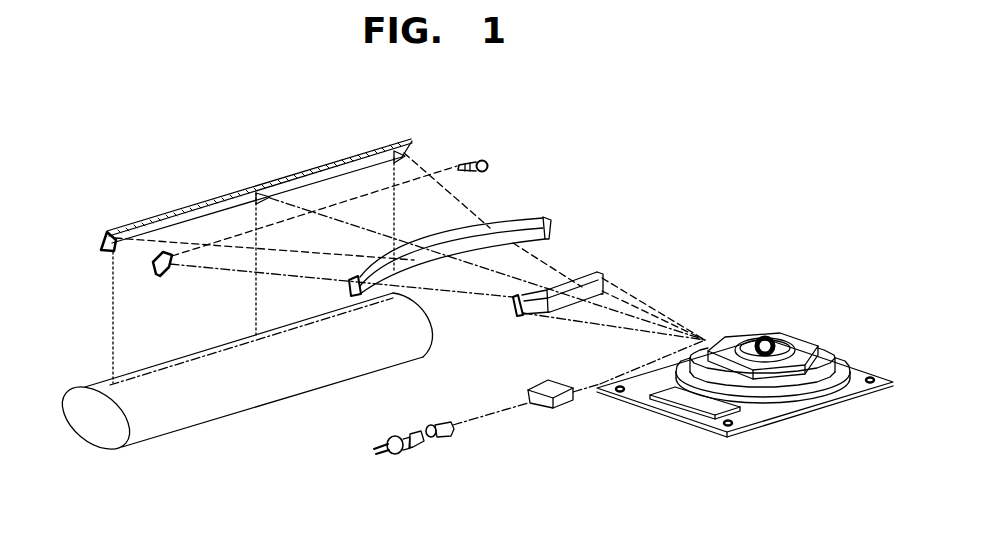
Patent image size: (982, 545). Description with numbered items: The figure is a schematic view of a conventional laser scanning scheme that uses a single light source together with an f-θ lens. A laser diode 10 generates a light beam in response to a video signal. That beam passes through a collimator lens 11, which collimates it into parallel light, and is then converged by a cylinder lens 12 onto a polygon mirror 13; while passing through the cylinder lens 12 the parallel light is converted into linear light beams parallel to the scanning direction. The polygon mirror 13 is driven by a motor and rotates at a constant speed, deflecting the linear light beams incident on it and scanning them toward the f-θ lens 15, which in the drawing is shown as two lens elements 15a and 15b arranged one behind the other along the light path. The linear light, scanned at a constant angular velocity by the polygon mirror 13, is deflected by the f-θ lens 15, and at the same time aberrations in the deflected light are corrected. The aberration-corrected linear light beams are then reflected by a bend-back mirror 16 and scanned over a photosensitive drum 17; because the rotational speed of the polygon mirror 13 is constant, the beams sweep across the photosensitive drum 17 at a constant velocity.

The laser diode 10 is at (410, 451).
The collimator lens 11 is at (445, 438).
The cylinder lens 12 is at (573, 403).
The polygon mirror 13 is at (770, 333).
The f-θ lens 15 is at (516, 244).
The first lens 15a is at (602, 280).
The second lens 15b is at (520, 221).
The bend-back mirror 16 is at (192, 202).
The photosensitive drum 17 is at (188, 415).